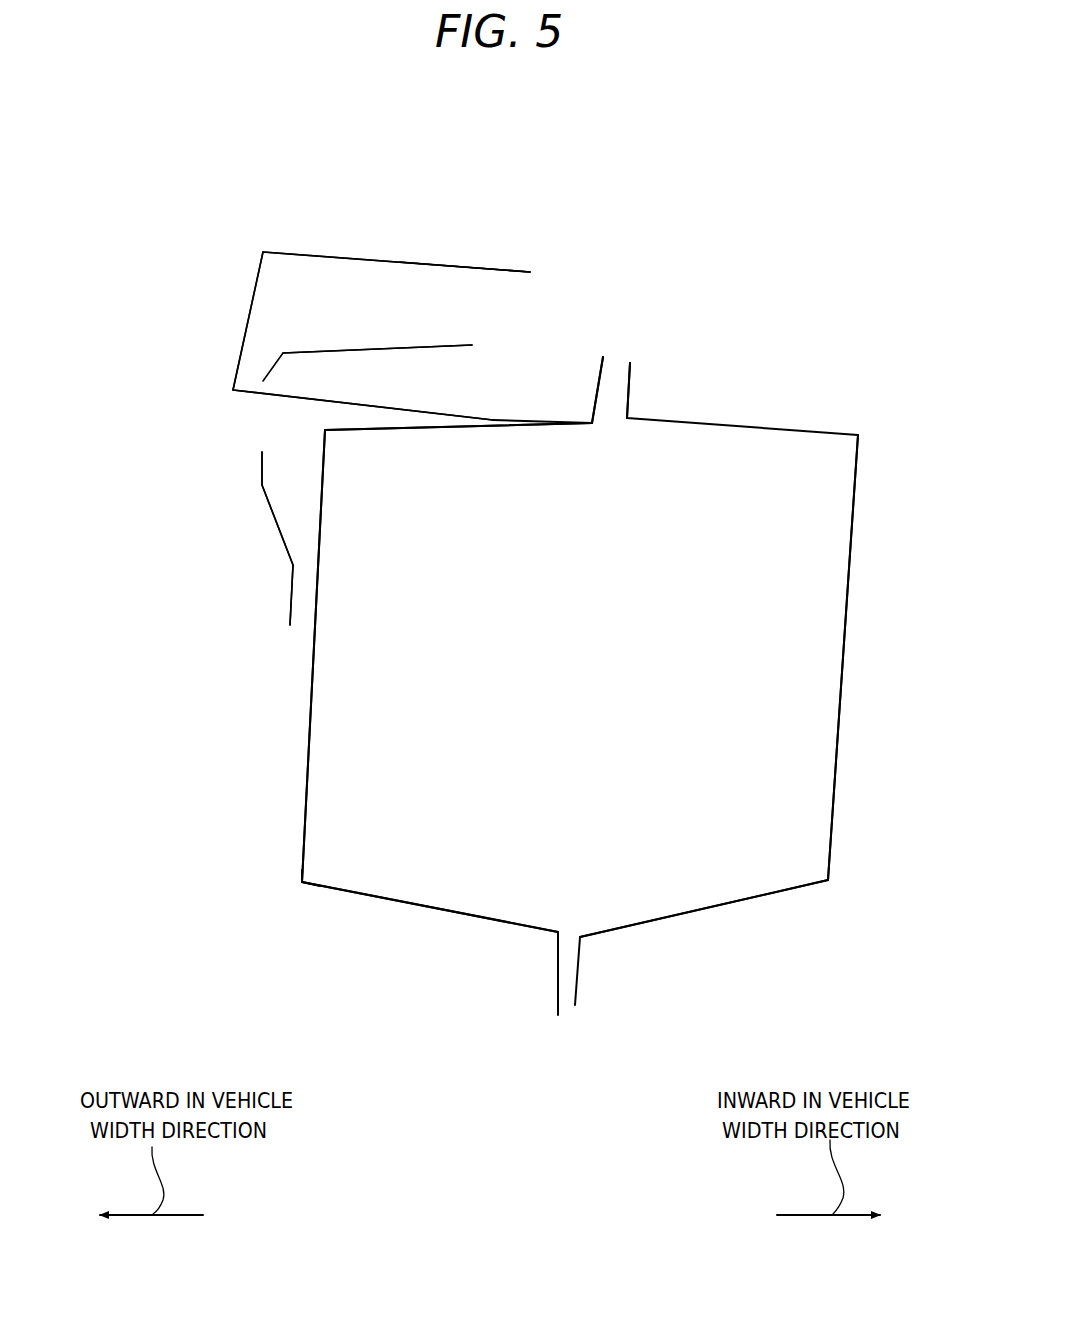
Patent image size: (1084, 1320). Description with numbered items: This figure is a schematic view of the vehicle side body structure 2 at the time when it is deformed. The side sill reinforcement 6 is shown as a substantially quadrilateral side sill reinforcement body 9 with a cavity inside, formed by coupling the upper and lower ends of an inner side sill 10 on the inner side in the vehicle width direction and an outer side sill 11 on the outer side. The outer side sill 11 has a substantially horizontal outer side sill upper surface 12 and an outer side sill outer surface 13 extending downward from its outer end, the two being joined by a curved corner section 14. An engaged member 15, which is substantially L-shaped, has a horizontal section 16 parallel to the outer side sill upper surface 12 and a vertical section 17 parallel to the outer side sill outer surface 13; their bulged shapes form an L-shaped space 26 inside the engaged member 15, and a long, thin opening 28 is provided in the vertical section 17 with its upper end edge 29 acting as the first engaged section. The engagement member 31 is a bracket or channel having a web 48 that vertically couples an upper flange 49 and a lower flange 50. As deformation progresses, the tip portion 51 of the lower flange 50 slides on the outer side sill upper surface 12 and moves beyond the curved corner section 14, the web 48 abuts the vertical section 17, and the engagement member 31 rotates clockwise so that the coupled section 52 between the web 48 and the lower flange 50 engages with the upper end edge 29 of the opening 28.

The side body structure 2 is at (318, 1017).
The side sill reinforcement 6 is at (418, 907).
The side sill reinforcement body 9 is at (713, 908).
The inner side sill 10 is at (832, 863).
The outer side sill 11 is at (302, 870).
The outer side sill upper surface 12 is at (577, 423).
The outer side sill outer surface 13 is at (308, 738).
The curved corner section 14 is at (325, 430).
The engaged member 15 is at (290, 606).
The horizontal section 16 is at (430, 345).
The vertical section 17 is at (262, 470).
The L-shaped space 26 is at (500, 374).
The opening 28 is at (254, 435).
The upper end edge 29 is at (263, 381).
The engagement member 31 is at (483, 267).
The web 48 is at (252, 290).
The upper flange 49 is at (328, 257).
The lower flange 50 is at (410, 408).
The tip portion 51 is at (492, 418).
The coupled section 52 is at (233, 390).